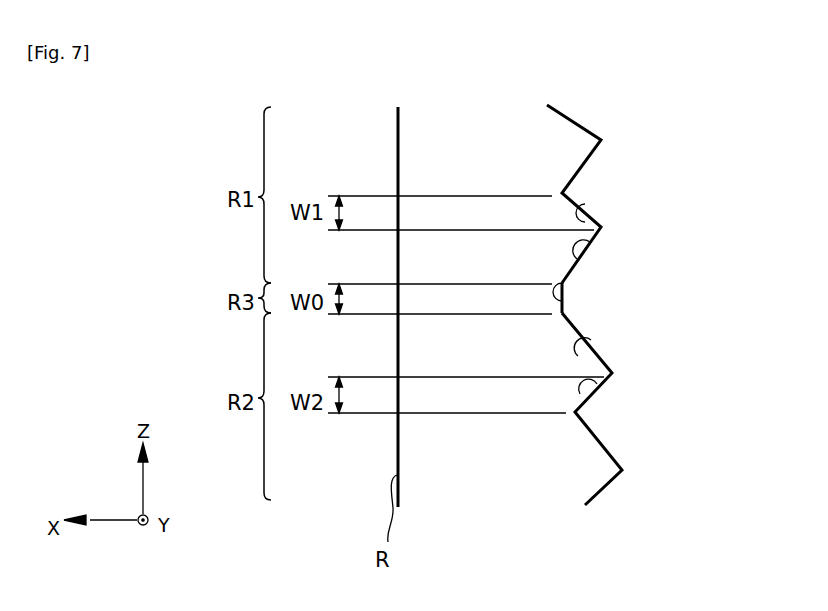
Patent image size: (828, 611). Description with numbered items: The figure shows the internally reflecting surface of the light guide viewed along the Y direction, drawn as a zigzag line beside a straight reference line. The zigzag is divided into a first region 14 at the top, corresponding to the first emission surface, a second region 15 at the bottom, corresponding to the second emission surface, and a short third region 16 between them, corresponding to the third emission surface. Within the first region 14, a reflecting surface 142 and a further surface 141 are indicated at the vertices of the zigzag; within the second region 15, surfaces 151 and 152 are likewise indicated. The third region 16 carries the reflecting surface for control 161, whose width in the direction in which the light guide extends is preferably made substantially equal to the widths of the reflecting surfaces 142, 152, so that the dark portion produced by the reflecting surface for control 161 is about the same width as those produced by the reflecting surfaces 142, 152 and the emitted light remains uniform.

The first region 14 is at (592, 108).
The first portion of first element 141 is at (596, 243).
The reflecting surface 142 is at (604, 221).
The second region 15 is at (630, 480).
The first portion of second element 151 is at (589, 354).
The reflecting surface 152 is at (606, 384).
The third region 16 is at (580, 297).
The reflecting surface for control 161 is at (565, 283).